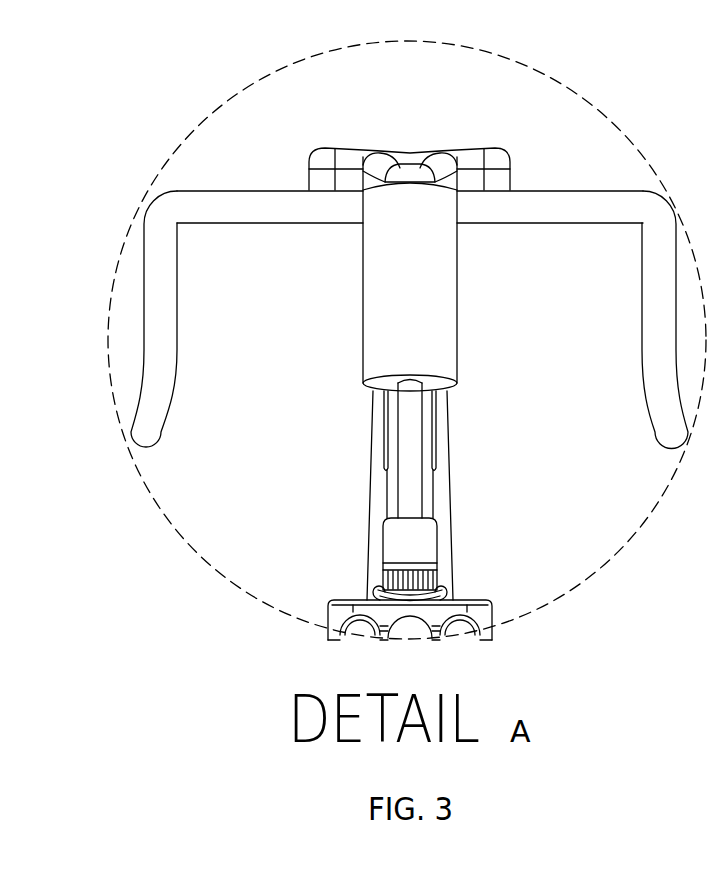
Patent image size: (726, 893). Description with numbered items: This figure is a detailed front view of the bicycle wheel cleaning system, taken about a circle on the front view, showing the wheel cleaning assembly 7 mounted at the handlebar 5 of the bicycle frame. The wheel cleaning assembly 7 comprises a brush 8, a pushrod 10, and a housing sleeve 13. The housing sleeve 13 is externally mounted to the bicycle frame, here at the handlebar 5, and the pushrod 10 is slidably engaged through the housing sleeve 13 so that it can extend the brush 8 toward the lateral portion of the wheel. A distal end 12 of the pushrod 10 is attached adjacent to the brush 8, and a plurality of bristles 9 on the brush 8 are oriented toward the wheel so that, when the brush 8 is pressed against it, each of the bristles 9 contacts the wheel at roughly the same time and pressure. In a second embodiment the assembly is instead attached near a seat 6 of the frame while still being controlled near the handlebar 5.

The handlebar 5 is at (165, 421).
The seat 6 is at (468, 150).
The wheel cleaning assembly 7 is at (326, 309).
The brush 8 is at (378, 571).
The bristles 9 is at (378, 591).
The pushrod 10 is at (400, 448).
The distal end 12 is at (422, 558).
The housing sleeve 13 is at (457, 328).